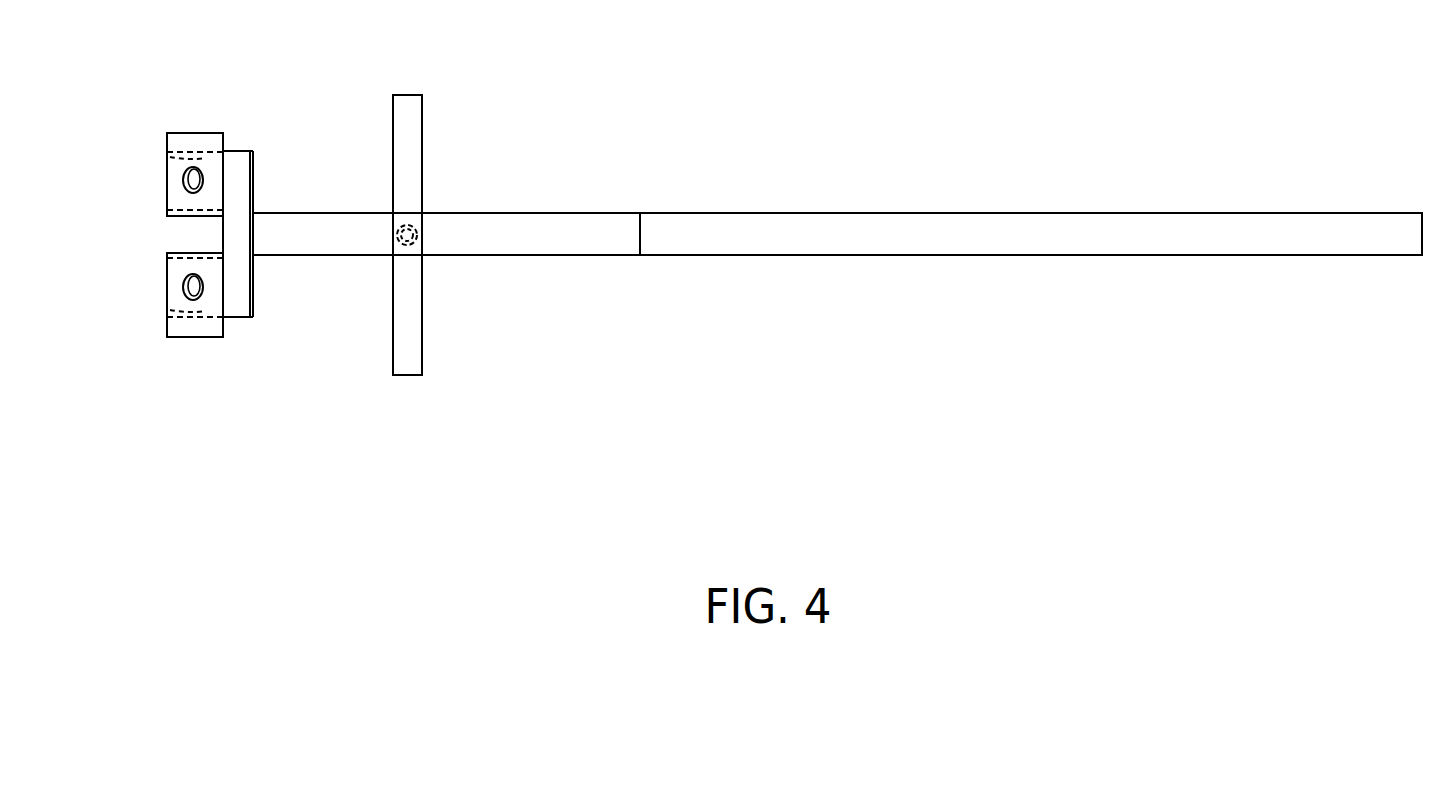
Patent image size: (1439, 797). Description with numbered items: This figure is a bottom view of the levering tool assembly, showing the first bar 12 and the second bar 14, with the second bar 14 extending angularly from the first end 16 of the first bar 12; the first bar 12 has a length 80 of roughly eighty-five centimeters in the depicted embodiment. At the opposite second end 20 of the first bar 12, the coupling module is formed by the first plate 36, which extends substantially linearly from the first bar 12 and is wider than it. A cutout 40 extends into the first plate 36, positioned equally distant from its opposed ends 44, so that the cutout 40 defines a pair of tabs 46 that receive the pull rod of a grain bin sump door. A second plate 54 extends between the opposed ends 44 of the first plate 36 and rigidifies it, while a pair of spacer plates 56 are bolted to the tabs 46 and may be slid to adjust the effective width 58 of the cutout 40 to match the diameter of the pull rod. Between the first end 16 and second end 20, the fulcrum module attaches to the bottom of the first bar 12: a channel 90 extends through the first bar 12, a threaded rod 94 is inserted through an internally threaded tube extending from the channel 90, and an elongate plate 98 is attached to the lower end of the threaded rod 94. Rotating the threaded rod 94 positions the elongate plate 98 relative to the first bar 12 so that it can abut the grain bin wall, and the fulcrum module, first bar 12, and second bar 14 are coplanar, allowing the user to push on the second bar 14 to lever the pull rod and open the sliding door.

The first bar 12 is at (560, 258).
The second bar 14 is at (960, 206).
The first end 16 is at (642, 233).
The second end 20 is at (255, 233).
The first plate 36 is at (235, 290).
The cutout 40 is at (193, 233).
The opposed ends 44 is at (238, 152).
The tab 46 is at (168, 157).
The second plate 54 is at (255, 283).
The spacer plate 56 is at (198, 133).
The effective width 58 is at (217, 233).
The length 80 is at (550, 213).
The channel 90 is at (417, 227).
The threaded rod 94 is at (417, 240).
The elongate plate 98 is at (407, 362).